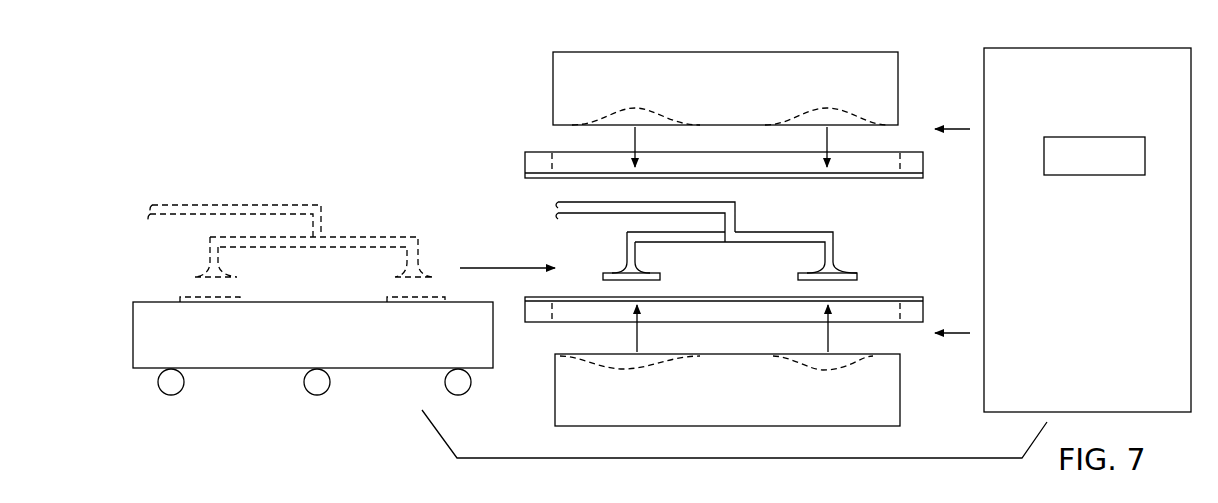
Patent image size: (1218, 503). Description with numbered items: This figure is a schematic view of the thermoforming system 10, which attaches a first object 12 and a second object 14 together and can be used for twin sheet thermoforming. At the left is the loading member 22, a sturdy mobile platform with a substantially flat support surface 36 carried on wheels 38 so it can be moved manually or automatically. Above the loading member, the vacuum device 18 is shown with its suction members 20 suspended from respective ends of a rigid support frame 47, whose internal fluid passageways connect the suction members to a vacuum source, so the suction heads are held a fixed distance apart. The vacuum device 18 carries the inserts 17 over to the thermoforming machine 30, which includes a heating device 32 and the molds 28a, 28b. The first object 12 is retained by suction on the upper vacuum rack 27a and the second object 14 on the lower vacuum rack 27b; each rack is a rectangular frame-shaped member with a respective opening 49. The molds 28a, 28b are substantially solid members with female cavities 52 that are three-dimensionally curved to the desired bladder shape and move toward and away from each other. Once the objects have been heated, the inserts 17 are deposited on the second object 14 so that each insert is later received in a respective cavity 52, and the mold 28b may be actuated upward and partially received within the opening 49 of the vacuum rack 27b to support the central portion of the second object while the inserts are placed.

The thermoforming system 10 is at (313, 103).
The first object 12 is at (882, 180).
The second object 14 is at (880, 295).
The insert 17 is at (402, 296).
The vacuum device 18 is at (813, 225).
The suction member 20 is at (422, 269).
The loading member 22 is at (242, 370).
The vacuum rack 27a is at (925, 157).
The vacuum rack 27b is at (925, 310).
The mold 28a is at (747, 58).
The mold 28b is at (753, 415).
The thermoforming machine 30 is at (1067, 57).
The heating device 32 is at (1090, 168).
The support surface 36 is at (262, 302).
The wheel 38 is at (318, 388).
The support frame 47 is at (333, 235).
The opening 49 is at (553, 167).
The female cavity 52 is at (653, 111).